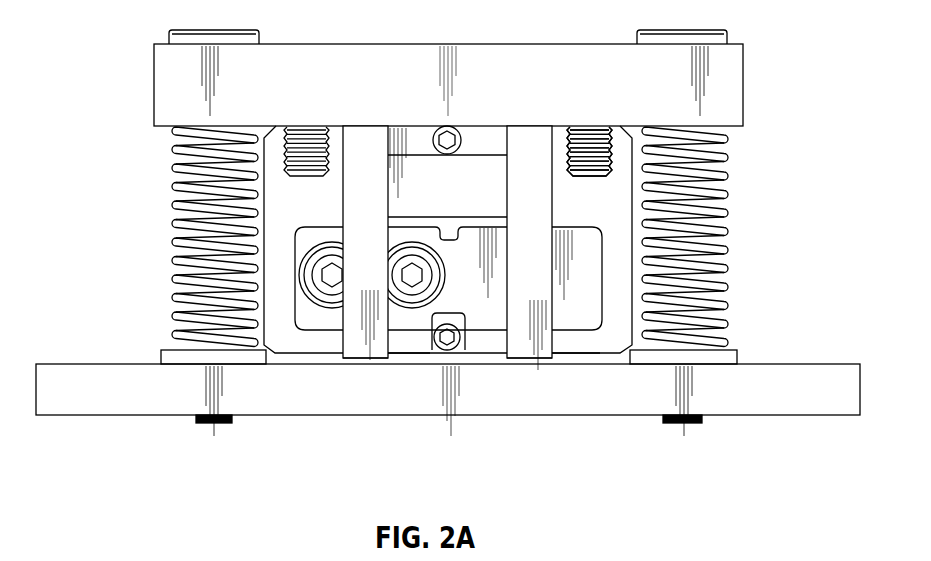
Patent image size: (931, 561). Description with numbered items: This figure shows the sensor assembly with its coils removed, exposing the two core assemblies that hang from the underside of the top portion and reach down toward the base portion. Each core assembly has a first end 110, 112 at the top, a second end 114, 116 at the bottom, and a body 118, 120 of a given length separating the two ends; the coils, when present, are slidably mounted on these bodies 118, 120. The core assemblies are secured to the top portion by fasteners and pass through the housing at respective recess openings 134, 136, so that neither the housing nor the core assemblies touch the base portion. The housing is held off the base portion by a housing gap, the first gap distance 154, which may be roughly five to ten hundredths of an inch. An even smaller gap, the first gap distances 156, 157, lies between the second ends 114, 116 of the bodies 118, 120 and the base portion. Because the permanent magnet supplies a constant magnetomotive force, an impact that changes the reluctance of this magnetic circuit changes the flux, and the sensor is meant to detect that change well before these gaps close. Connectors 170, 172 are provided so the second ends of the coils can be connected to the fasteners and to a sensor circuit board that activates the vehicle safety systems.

The first end 110 is at (377, 143).
The first end 112 is at (535, 143).
The second end 114 is at (383, 358).
The second end 116 is at (527, 358).
The body 118 is at (540, 263).
The body 120 is at (362, 268).
The recess opening 134 is at (405, 353).
The recess opening 136 is at (560, 353).
The first gap distance 154 is at (283, 362).
The first gap distance 156 is at (360, 362).
The first gap distance 157 is at (555, 360).
The connector 170 is at (303, 283).
The connector 172 is at (412, 265).